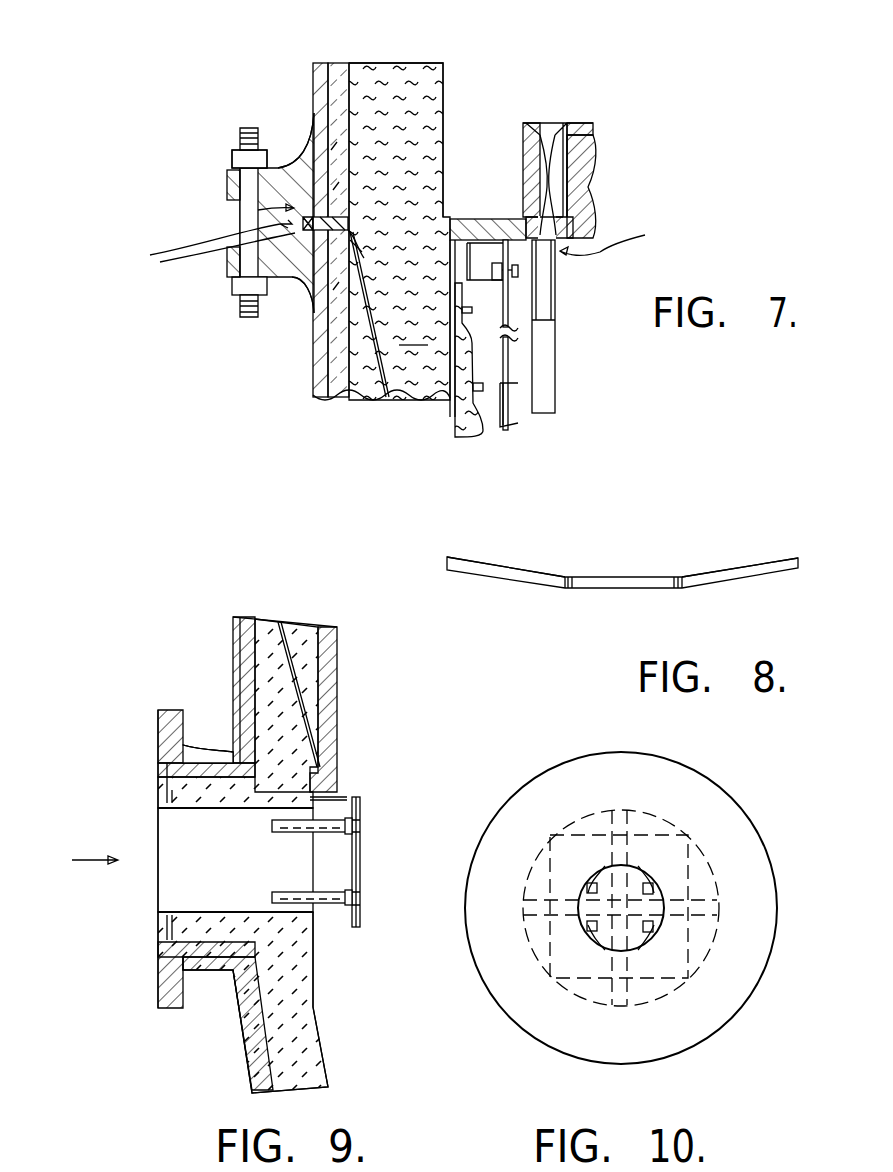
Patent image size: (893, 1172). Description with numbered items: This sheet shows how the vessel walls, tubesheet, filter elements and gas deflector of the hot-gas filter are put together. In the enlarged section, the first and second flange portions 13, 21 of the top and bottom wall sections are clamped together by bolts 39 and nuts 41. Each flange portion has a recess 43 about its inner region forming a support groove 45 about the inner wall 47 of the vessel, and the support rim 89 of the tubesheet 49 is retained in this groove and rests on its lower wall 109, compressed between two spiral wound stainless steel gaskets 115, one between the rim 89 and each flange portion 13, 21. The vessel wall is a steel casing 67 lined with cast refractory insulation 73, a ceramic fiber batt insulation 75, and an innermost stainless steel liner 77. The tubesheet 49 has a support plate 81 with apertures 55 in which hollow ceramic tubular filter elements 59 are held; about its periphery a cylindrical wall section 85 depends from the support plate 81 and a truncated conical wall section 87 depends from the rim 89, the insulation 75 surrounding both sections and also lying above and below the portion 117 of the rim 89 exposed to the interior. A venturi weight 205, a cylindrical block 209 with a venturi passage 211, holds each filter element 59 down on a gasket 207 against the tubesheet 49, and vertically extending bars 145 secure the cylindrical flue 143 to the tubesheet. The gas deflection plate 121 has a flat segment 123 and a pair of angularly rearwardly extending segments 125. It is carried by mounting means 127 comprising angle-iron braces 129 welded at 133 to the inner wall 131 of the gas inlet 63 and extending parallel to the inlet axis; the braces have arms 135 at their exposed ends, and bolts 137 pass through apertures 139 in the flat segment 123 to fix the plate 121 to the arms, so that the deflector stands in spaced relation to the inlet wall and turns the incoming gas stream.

In FIG. 7, the first flange portion 13 is at (295, 175).
In FIG. 7, the second flange portion 21 is at (262, 290).
In FIG. 7, the bolts 39 is at (232, 217).
In FIG. 7, the nuts 41 is at (232, 158).
In FIG. 7, the recess 43 is at (303, 163).
In FIG. 7, the support groove 45 is at (208, 236).
In FIG. 7, the inner wall 47 is at (356, 247).
In FIG. 7, the tube sheet 49 is at (506, 205).
In FIG. 7, the apertures 55 is at (617, 238).
In FIG. 7, the hollow ceramic tubular filter elements 59 is at (556, 370).
In FIG. 9, the gas inlet 63 is at (185, 838).
In FIG. 7, the steel casing 67 is at (313, 75).
In FIG. 7, the cast refractory insulation 73 is at (337, 63).
In FIG. 7, the ceramic fiber batt insulation 75 is at (378, 70).
In FIG. 9, the ceramic fiber batt insulation 75 is at (243, 856).
In FIG. 7, the innermost liner 77 is at (443, 65).
In FIG. 7, the support plate 81 is at (486, 222).
In FIG. 7, the cylindrical wall section 85 is at (452, 430).
In FIG. 9, the cylindrical wall section 85 is at (337, 650).
In FIG. 7, the truncated conical wall section 87 is at (402, 403).
In FIG. 9, the truncated conical wall section 87 is at (292, 640).
In FIG. 7, the support rim 89 is at (347, 220).
In FIG. 7, the lower wall 109 is at (300, 290).
In FIG. 7, the spiral wound stainless steel gaskets 115 is at (340, 172).
In FIG. 7, the exposed portion of rim 117 is at (349, 232).
In FIG. 8, the gas deflection plate 121 is at (660, 547).
In FIG. 9, the gas deflection plate 121 is at (364, 850).
In FIG. 10, the gas deflection plate 121 is at (621, 908).
In FIG. 8, the flat segment 123 is at (590, 590).
In FIG. 9, the flat segment 123 is at (357, 825).
In FIG. 10, the flat segment 123 is at (625, 882).
In FIG. 8, the angularly rearwardly extending segments 125 is at (760, 560).
In FIG. 9, the angularly rearwardly extending segments 125 is at (355, 800).
In FIG. 9, the mounting means 127 is at (337, 965).
In FIG. 9, the angle-iron braces 129 is at (290, 832).
In FIG. 10, the angle-iron braces 129 is at (618, 911).
In FIG. 9, the inner wall of gas inlet 131 is at (225, 912).
In FIG. 10, the inner wall of gas inlet 131 is at (640, 952).
In FIG. 10, the weld 133 is at (585, 870).
In FIG. 9, the arms 135 is at (353, 893).
In FIG. 10, the arms 135 is at (652, 893).
In FIG. 9, the bolts 137 is at (340, 908).
In FIG. 10, the bolts 137 is at (655, 925).
In FIG. 8, the apertures 139 is at (570, 572).
In FIG. 7, the cylindrical flue 143 is at (525, 425).
In FIG. 7, the vertically extending bars 145 is at (512, 300).
In FIG. 7, the venturi weight 205 is at (508, 128).
In FIG. 7, the gasket 207 is at (532, 268).
In FIG. 7, the cylindrical block 209 is at (560, 173).
In FIG. 7, the venturi passage 211 is at (542, 135).